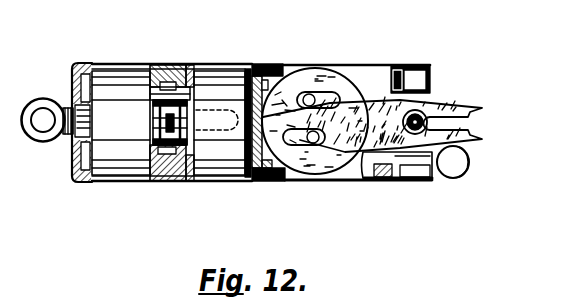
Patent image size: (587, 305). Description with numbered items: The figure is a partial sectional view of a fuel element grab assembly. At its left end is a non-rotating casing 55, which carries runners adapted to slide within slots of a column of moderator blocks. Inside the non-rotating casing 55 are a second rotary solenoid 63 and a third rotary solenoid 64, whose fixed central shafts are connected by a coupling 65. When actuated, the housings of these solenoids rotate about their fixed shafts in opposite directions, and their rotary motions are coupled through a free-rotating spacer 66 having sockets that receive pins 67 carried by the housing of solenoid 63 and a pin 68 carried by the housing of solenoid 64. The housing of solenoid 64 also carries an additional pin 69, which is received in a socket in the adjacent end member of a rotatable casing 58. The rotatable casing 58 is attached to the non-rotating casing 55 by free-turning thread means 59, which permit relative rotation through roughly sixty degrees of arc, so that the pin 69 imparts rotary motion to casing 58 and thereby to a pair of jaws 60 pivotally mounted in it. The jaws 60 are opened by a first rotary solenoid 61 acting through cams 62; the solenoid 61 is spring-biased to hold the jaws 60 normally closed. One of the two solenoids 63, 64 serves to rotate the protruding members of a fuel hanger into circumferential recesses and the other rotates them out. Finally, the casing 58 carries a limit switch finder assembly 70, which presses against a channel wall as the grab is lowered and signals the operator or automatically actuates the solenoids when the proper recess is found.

The non-rotating casing 55 is at (101, 62).
The rotatable casing 58 is at (415, 63).
The free-turning thread means 59 is at (268, 181).
The jaws 60 is at (457, 131).
The first rotary solenoid 61 is at (322, 82).
The cams 62 is at (313, 137).
The second rotary solenoid 63 is at (212, 157).
The third rotary solenoid 64 is at (121, 160).
The coupling 65 is at (164, 99).
The free-rotating spacer 66 is at (163, 68).
The pins 67 is at (189, 65).
The pin 68 is at (187, 63).
The additional pin 69 is at (270, 65).
The limit switch finder assembly 70 is at (469, 168).